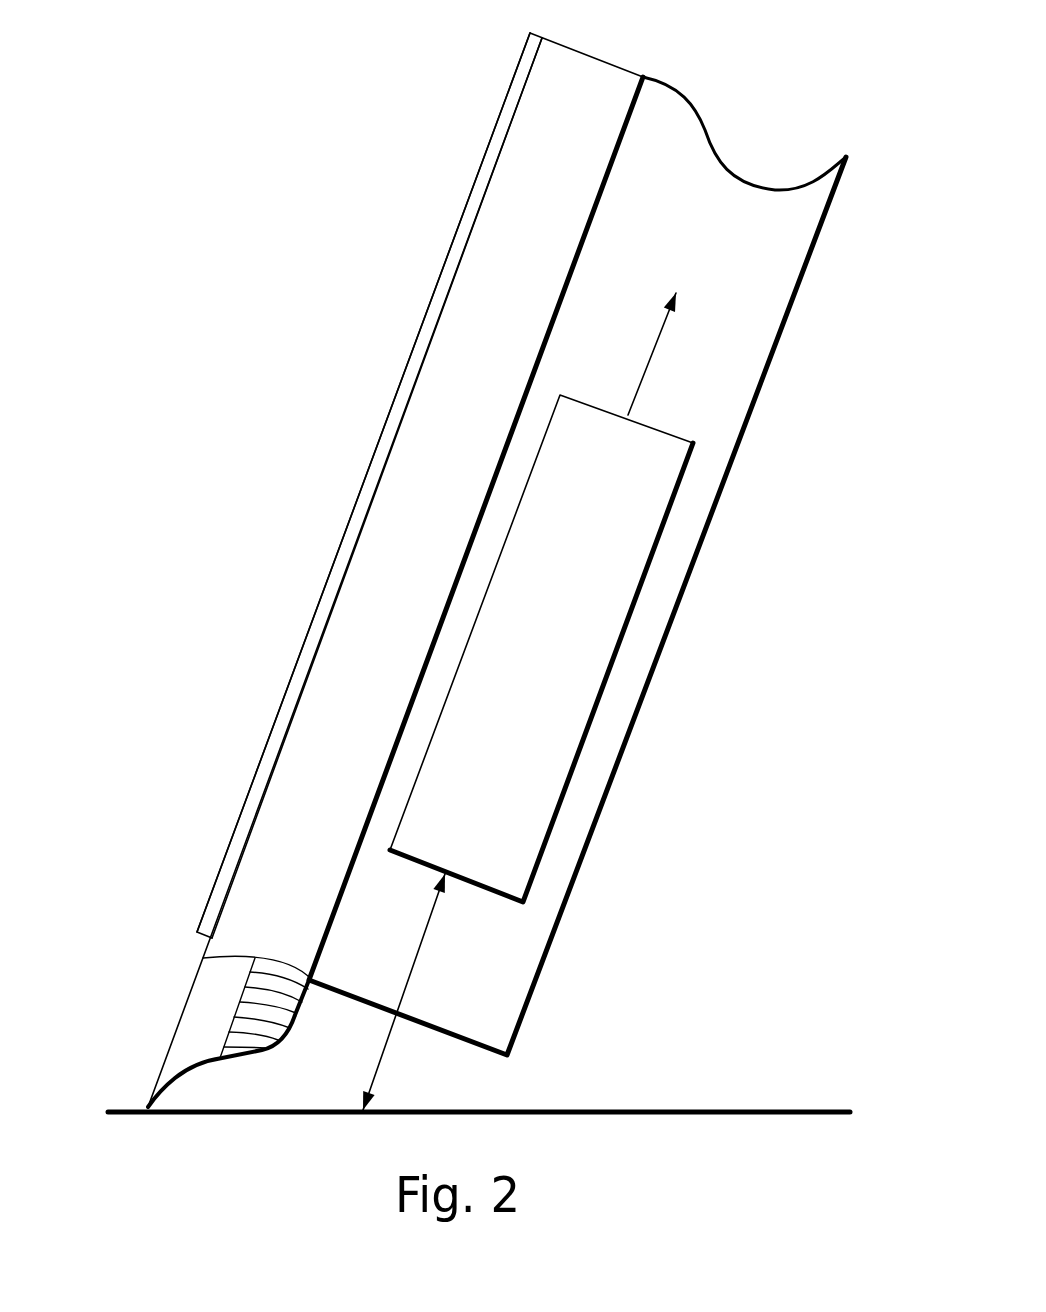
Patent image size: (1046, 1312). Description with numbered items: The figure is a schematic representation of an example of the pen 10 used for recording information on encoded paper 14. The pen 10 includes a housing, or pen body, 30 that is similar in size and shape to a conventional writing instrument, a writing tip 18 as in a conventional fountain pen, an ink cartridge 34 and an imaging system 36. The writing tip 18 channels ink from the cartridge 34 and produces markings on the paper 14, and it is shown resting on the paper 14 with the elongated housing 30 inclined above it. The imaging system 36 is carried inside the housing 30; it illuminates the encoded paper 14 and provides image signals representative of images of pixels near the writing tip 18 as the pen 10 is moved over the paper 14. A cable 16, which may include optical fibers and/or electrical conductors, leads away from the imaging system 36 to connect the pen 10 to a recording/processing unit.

The pen 10 is at (428, 175).
The encoded paper 14 is at (738, 1112).
The cable 16 is at (650, 365).
The writing tip 18 is at (150, 1093).
The housing 30 is at (312, 617).
The ink cartridge 34 is at (353, 552).
The imaging system 36 is at (632, 617).